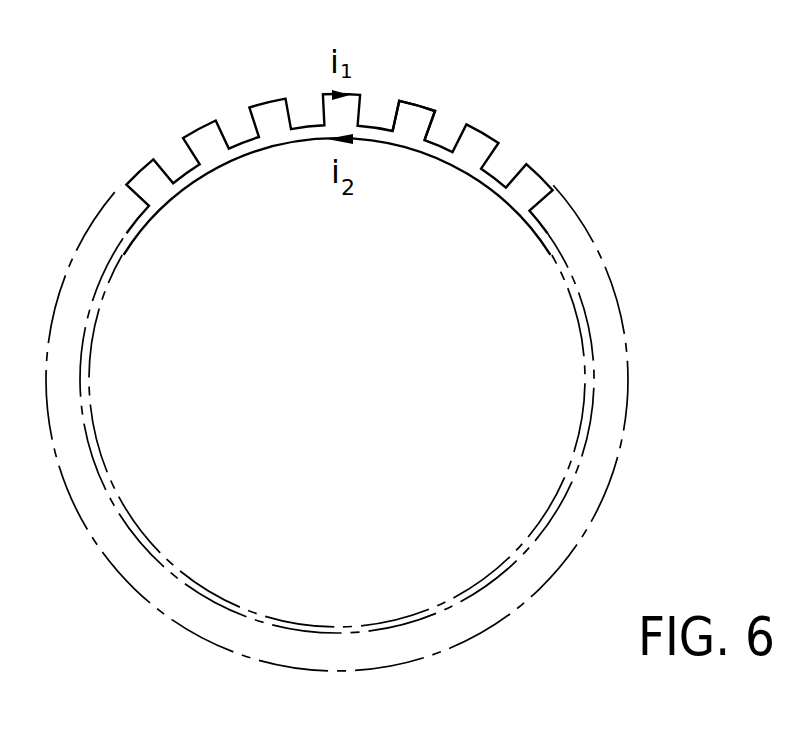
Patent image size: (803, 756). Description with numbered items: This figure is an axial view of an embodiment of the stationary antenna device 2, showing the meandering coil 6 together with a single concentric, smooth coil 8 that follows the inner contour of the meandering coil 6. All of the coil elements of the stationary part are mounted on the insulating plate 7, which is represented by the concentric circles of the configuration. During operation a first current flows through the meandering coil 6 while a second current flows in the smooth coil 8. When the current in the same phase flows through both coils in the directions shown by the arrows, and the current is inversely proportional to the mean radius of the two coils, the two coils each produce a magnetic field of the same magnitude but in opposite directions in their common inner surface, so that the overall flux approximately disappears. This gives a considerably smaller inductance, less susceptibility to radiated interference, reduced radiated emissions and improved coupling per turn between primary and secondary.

The stationary antenna device 2 is at (170, 118).
The meandering coil 6 is at (418, 103).
The insulating plate 7 is at (478, 298).
The smooth coil 8 is at (437, 160).